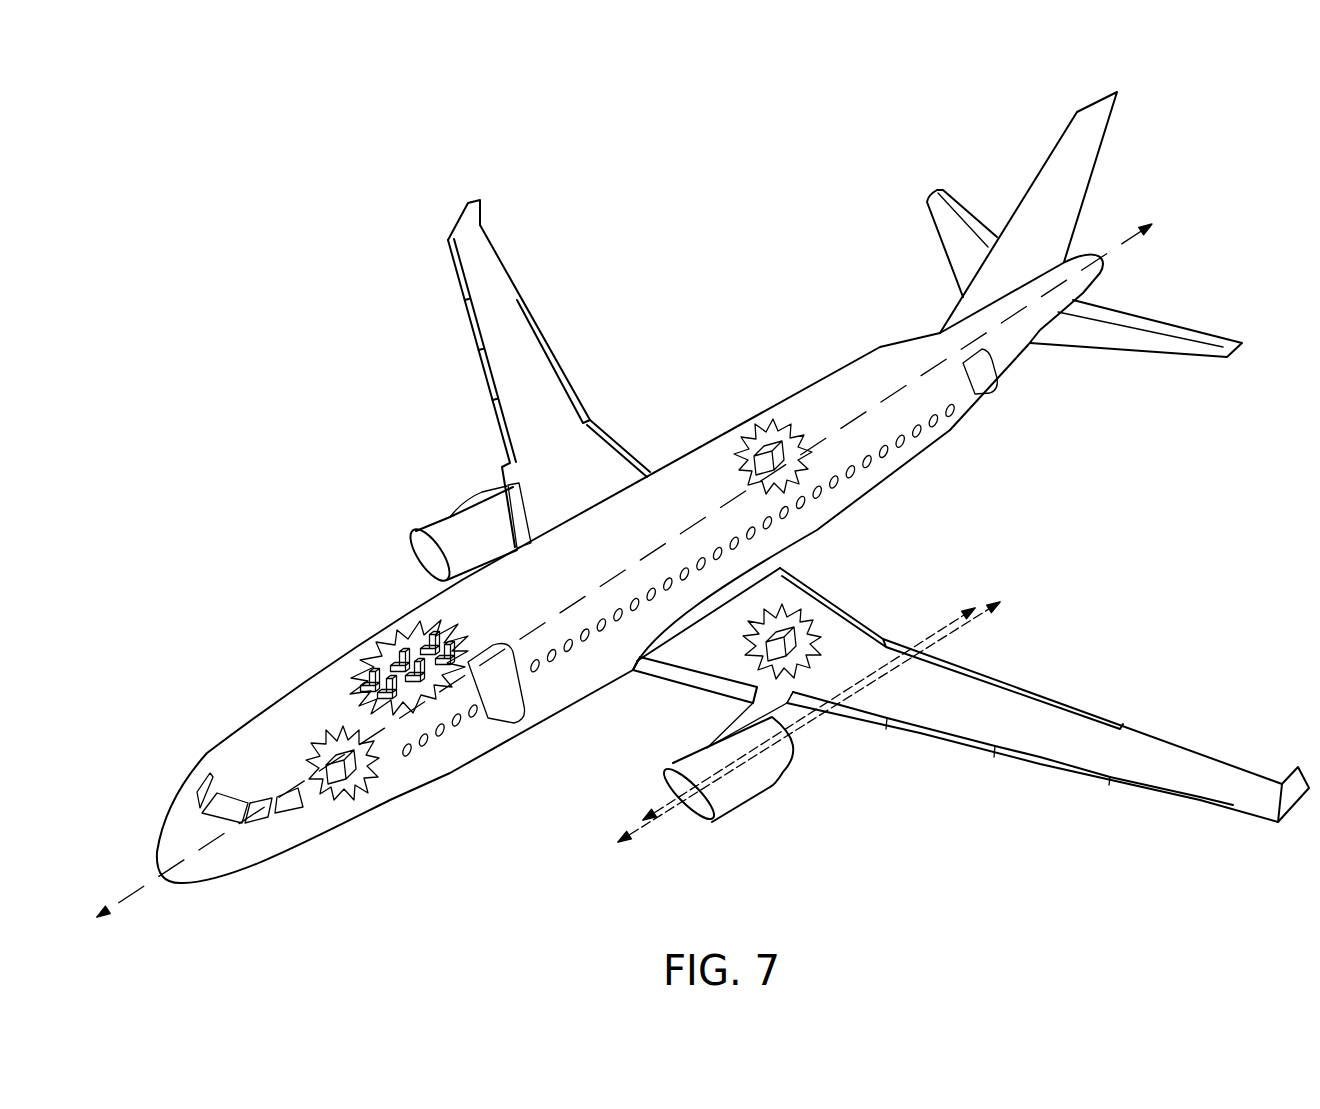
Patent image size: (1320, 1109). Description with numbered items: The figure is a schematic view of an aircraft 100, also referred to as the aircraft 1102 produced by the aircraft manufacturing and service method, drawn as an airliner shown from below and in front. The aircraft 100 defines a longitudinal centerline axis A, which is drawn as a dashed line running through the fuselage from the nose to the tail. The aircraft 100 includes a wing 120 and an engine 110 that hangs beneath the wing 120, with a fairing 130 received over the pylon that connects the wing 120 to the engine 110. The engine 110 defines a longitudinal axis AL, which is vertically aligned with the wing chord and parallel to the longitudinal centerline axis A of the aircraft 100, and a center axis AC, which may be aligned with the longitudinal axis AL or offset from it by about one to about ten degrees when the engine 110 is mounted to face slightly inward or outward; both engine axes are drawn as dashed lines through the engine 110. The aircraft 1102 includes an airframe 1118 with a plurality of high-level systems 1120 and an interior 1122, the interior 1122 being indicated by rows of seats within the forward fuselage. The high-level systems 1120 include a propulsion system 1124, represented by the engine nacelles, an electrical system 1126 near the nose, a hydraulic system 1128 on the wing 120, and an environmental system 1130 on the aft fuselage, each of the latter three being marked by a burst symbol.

The aircraft 100 is at (703, 490).
The aircraft 1102 is at (277, 441).
The engine 110 is at (723, 802).
The wing 120 is at (971, 692).
The fairing 130 is at (737, 705).
The airframe 1118 is at (377, 618).
The high-level systems 1120 is at (1060, 608).
The interior 1122 is at (370, 687).
The propulsion system 1124 is at (433, 522).
The electrical system 1126 is at (343, 760).
The hydraulic system 1128 is at (790, 644).
The environmental system 1130 is at (770, 443).
The longitudinal centerline axis A is at (1123, 243).
The longitudinal axis AL is at (955, 622).
The center axis AC is at (960, 625).